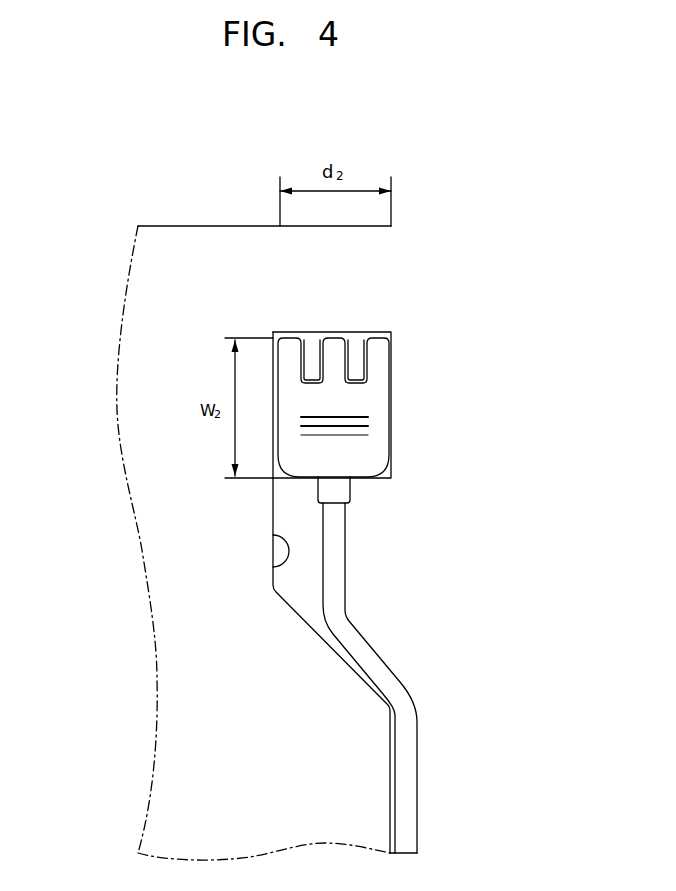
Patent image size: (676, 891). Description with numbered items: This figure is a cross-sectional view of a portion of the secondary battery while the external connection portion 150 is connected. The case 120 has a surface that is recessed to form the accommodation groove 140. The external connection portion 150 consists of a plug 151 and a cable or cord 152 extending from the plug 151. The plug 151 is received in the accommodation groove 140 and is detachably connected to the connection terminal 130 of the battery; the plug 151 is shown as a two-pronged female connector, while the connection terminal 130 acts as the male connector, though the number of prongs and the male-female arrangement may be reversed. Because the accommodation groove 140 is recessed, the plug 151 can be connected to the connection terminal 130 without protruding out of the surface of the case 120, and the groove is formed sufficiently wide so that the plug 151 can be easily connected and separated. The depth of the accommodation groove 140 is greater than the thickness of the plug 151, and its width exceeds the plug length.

The case 120 is at (241, 763).
The connection terminal 130 is at (358, 342).
The accommodation groove 140 is at (273, 560).
The external connection portion 150 is at (429, 553).
The plug 151 is at (378, 391).
The cable or cord 152 is at (340, 523).